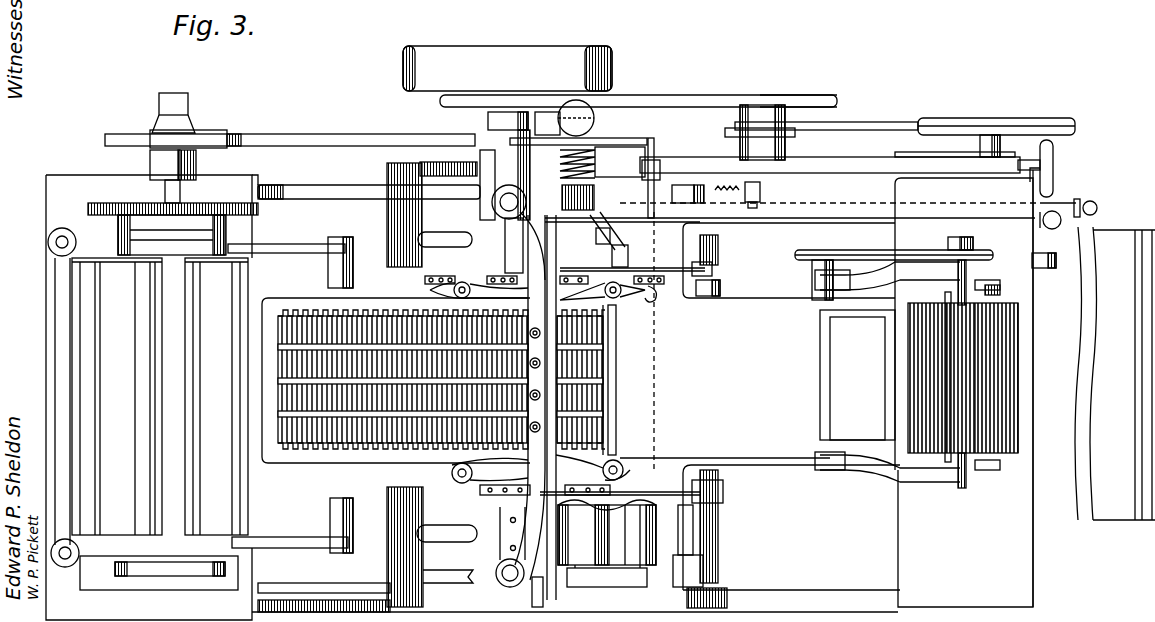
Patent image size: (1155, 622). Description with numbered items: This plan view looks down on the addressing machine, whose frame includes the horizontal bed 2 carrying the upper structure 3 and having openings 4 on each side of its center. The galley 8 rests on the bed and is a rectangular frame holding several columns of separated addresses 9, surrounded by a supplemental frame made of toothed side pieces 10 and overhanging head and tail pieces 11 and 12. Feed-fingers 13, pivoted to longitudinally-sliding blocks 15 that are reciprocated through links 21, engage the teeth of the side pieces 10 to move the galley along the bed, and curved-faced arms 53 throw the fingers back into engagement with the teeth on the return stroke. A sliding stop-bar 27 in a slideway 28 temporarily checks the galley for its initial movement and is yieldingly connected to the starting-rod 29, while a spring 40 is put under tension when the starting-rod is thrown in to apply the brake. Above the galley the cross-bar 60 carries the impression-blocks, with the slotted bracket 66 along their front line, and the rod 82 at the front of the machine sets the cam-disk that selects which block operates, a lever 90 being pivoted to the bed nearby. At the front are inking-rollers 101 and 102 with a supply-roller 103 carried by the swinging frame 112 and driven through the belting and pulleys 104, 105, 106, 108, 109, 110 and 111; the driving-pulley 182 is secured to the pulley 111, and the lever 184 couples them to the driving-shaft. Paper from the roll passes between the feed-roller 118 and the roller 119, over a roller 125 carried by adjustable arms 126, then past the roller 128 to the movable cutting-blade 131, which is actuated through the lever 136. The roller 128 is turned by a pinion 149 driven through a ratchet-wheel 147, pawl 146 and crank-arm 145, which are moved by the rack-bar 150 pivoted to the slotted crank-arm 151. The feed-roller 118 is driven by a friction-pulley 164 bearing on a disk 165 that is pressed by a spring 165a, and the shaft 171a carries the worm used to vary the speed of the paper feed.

The horizontal bed 2 is at (898, 523).
The upper structure 3 is at (450, 583).
The openings 4 is at (576, 398).
The galley 8 is at (618, 363).
The columns of separated addresses 9 is at (318, 325).
The toothed side pieces 10 is at (340, 312).
The head piece 11 is at (266, 466).
The tail piece 12 is at (608, 396).
The feed-fingers 13 is at (470, 280).
The sliding blocks 15 is at (603, 472).
The links 21 is at (672, 270).
The sliding stop-bar 27 is at (547, 580).
The slideway 28 is at (500, 530).
The starting-rod 29 is at (1066, 200).
The spring 40 is at (760, 195).
The curved-faced arms 53 is at (655, 300).
The cross-bar 60 is at (505, 243).
The bracket 66 is at (516, 190).
The rod 82 is at (776, 230).
The link 90 is at (620, 242).
The inking-roller 101 is at (1020, 362).
The inking-roller 102 is at (905, 345).
The supply-roller 103 is at (965, 325).
The pulley 104 is at (975, 246).
The pulley 105 is at (865, 250).
The pulley 106 is at (800, 268).
The pulley 108 is at (950, 118).
The pulley 109 is at (738, 133).
The pulley 110 is at (783, 95).
The pulley 111 is at (442, 108).
The swinging frame 112 is at (855, 440).
The feed-roller 118 is at (607, 543).
The roller 119 is at (627, 535).
The roller 125 is at (352, 265).
The adjustable arms 126 is at (305, 243).
The roller 128 is at (110, 520).
The movable cutting-blade 131 is at (72, 298).
The lever 136 is at (325, 583).
The crank-arm 145 is at (198, 160).
The pawl 146 is at (158, 172).
The ratchet-wheel 147 is at (150, 180).
The pinion 149 is at (92, 203).
The rack-bar 150 is at (312, 146).
The crank-arm 151 is at (460, 176).
The friction-pulley 164 is at (594, 115).
The disk 165 is at (638, 140).
The spring 165a is at (596, 160).
The shaft 171a is at (825, 168).
The driving-pulley 182 is at (403, 68).
The lever 184 is at (488, 120).